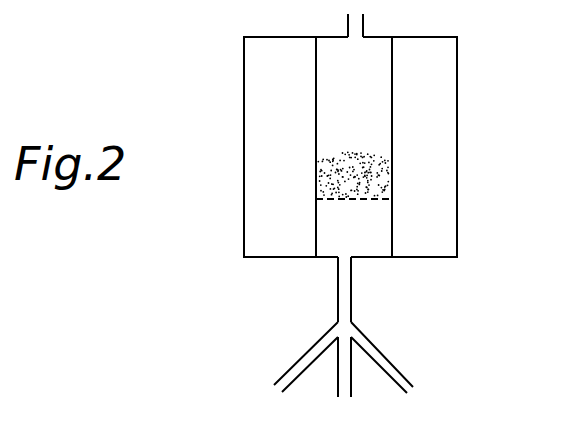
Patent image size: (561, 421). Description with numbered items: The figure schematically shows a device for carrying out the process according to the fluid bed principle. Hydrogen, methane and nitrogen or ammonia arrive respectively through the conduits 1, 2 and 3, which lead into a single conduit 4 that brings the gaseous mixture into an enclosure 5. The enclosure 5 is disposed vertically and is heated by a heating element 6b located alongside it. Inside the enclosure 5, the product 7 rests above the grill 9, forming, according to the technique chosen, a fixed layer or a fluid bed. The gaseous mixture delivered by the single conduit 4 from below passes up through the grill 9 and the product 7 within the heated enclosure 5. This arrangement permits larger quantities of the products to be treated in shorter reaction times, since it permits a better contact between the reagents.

The conduit 1 is at (312, 353).
The conduit 2 is at (351, 383).
The conduit 3 is at (380, 363).
The single conduit 4 is at (351, 291).
The enclosure 5 is at (354, 79).
The heating element 6b is at (282, 148).
The product 7 is at (351, 160).
The grill 9 is at (352, 200).